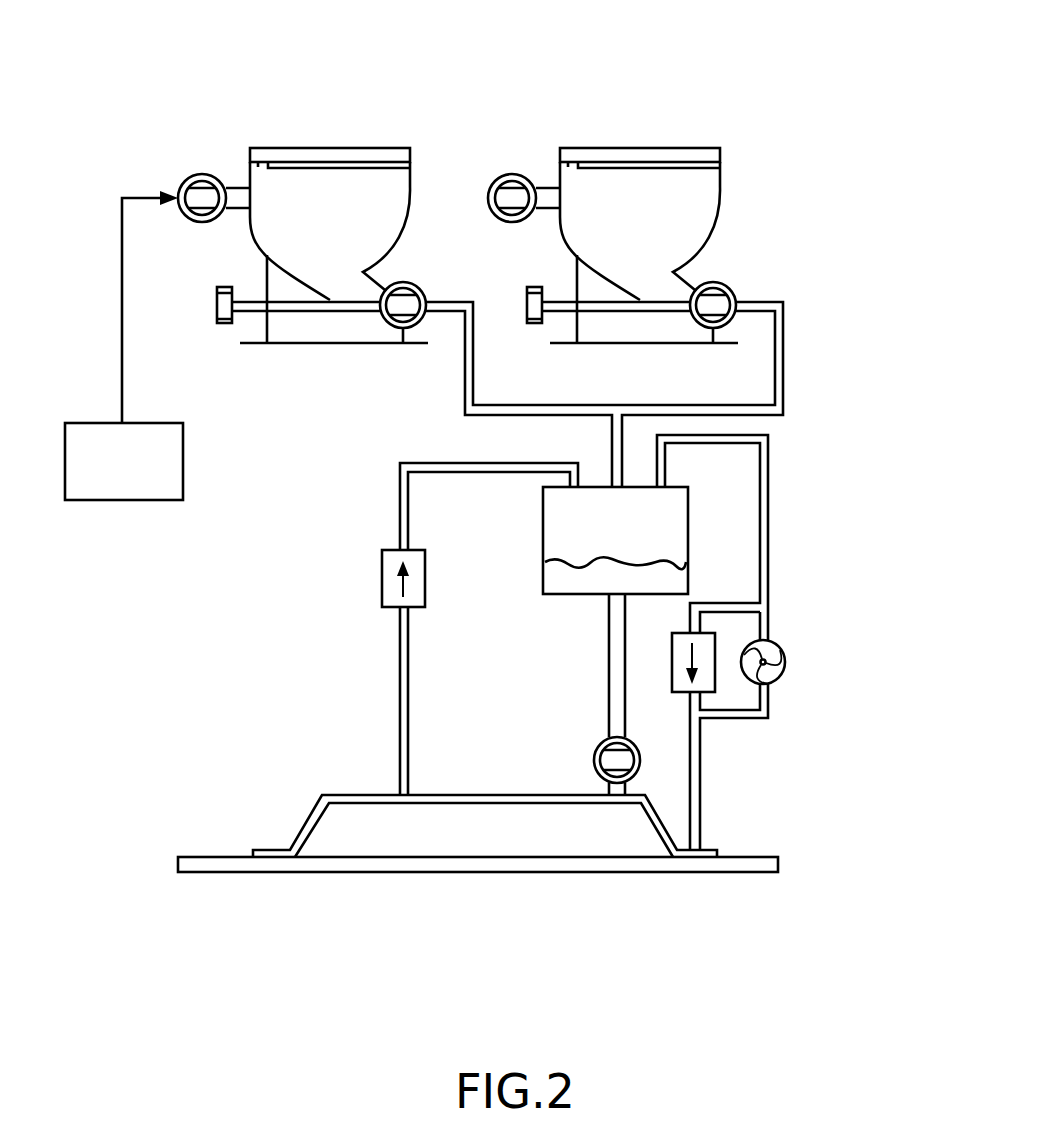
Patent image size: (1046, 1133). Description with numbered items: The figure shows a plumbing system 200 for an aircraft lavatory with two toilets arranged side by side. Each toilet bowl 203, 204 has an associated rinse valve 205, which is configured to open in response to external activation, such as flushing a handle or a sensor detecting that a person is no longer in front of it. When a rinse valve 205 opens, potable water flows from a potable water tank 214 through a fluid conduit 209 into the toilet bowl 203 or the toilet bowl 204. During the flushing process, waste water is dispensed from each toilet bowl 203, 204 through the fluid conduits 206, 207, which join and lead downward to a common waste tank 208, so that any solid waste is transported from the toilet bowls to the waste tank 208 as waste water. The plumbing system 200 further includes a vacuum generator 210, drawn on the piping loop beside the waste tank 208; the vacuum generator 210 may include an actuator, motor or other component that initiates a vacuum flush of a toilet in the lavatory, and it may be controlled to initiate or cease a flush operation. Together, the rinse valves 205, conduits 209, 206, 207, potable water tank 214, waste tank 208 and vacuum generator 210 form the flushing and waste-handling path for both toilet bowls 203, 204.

The plumbing system 200 is at (714, 78).
The toilet bowl 203 is at (342, 222).
The toilet bowl 204 is at (652, 222).
The rinse valve 205 is at (202, 175).
The fluid conduit 206 is at (464, 382).
The fluid conduit 207 is at (783, 348).
The waste tank 208 is at (543, 519).
The fluid conduit 209 is at (237, 195).
The vacuum generator 210 is at (782, 650).
The potable water tank 214 is at (163, 502).